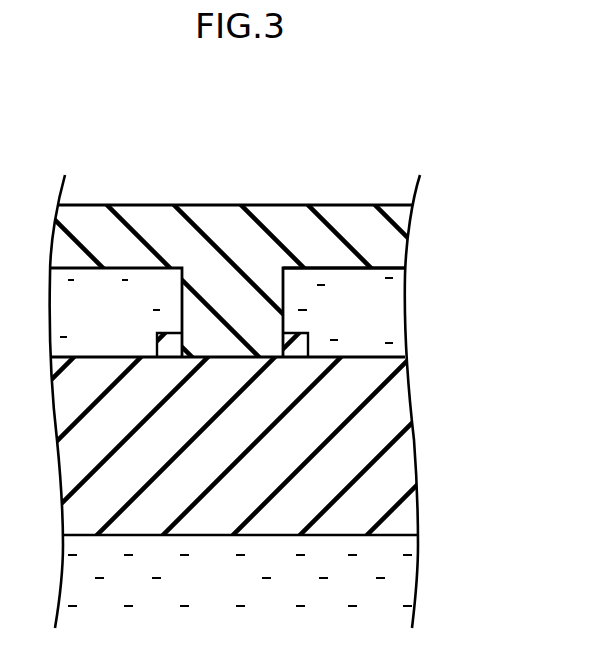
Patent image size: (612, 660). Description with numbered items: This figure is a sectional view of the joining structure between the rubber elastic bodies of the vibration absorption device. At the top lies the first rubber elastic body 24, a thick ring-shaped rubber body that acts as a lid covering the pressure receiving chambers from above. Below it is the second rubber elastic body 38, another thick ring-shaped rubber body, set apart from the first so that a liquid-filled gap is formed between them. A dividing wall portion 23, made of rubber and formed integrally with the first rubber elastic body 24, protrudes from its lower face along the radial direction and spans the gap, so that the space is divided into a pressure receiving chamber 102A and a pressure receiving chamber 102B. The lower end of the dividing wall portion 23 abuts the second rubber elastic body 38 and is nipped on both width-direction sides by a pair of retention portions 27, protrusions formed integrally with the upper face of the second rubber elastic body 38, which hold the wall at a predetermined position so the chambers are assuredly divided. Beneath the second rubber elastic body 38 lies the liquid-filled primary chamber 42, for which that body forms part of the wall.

The dividing wall portion 23 is at (285, 286).
The first rubber elastic body 24 is at (342, 218).
The retention portions 27 is at (157, 334).
The second rubber elastic body 38 is at (400, 456).
The primary chamber 42 is at (231, 586).
The pressure receiving chamber 102A is at (71, 314).
The pressure receiving chamber 102B is at (328, 322).